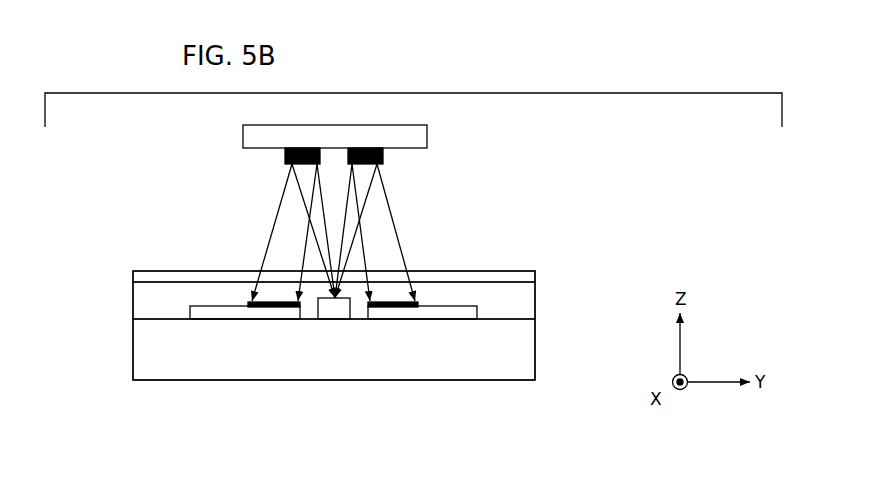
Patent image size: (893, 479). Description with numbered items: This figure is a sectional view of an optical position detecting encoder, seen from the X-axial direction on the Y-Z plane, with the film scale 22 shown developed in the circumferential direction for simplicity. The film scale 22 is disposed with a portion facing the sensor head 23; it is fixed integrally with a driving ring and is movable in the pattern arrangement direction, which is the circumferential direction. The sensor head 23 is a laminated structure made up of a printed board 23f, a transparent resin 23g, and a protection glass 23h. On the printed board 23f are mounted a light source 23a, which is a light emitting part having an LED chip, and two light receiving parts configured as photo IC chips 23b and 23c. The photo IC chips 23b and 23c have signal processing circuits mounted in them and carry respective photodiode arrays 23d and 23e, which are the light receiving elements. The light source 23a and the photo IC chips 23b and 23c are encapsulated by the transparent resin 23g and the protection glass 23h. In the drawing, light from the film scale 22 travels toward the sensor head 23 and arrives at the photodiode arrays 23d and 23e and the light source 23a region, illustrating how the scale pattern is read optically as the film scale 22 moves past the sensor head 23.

The film scale 22 is at (427, 140).
The sensor head 23 is at (337, 325).
The light source 23a is at (333, 312).
The photo IC chip 23b is at (223, 313).
The photo IC chip 23c is at (445, 313).
The photodiode array 23d is at (268, 307).
The photodiode array 23e is at (392, 308).
The printed board 23f is at (523, 353).
The transparent resin 23g is at (523, 298).
The protection glass 23h is at (477, 273).